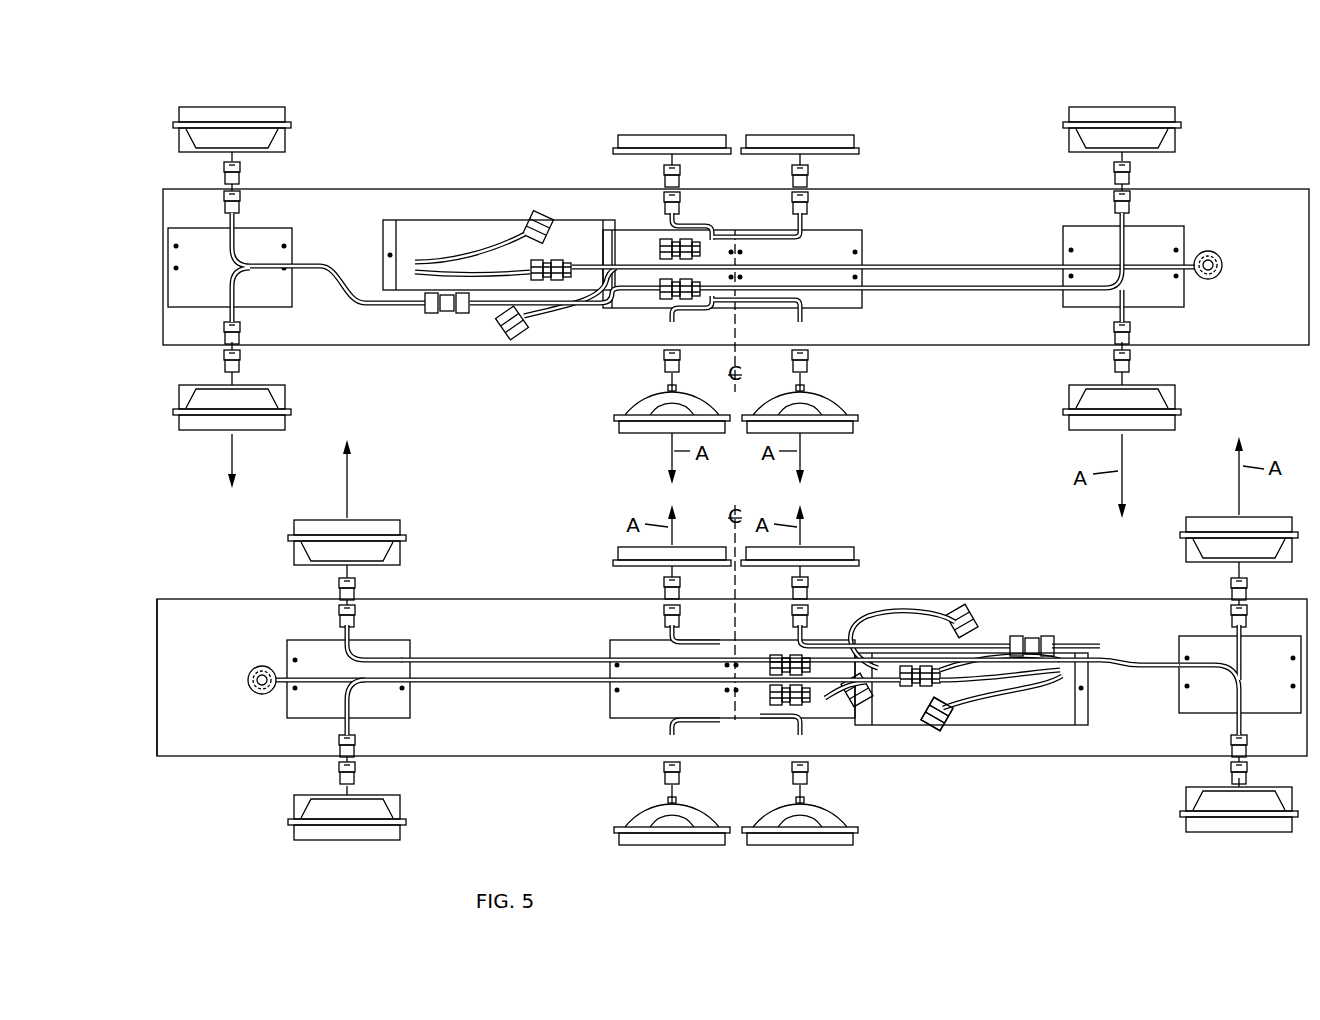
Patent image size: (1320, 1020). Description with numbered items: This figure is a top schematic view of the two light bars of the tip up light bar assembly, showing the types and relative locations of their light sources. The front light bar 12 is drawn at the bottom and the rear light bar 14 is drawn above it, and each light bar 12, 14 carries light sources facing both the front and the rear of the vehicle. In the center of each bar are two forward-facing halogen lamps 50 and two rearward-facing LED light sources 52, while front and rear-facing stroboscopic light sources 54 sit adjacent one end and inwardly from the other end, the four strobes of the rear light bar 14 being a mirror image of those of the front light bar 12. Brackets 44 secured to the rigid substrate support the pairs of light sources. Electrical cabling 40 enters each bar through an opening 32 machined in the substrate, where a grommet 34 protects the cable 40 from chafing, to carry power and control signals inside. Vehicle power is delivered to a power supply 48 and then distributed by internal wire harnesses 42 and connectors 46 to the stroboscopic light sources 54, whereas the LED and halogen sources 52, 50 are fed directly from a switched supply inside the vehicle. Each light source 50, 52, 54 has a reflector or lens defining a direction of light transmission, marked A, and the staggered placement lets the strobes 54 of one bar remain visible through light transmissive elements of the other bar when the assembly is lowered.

The front light bar 12 is at (174, 693).
The rear light bar 14 is at (1248, 276).
The opening 32 is at (199, 638).
The grommet 34 is at (194, 716).
The electrical cabling 40 is at (948, 265).
The internal wire harnesses 42 is at (323, 265).
The brackets 44 is at (1150, 226).
The connectors 46 is at (936, 730).
The power supply 48 is at (578, 220).
The halogen lamps 50 is at (652, 434).
The LED light sources 52 is at (652, 135).
The stroboscopic light sources 54 is at (285, 107).